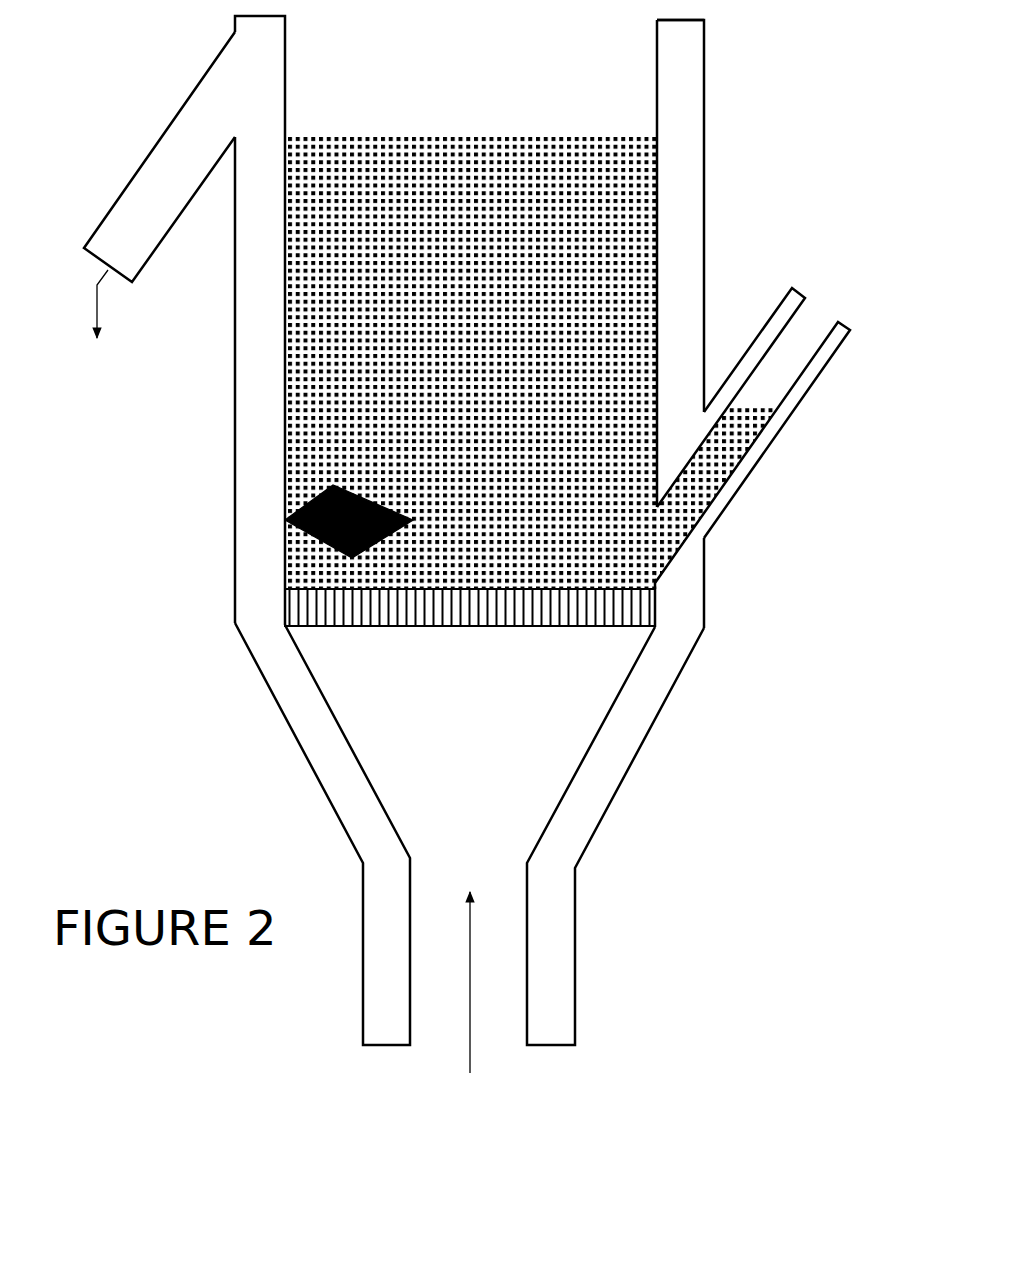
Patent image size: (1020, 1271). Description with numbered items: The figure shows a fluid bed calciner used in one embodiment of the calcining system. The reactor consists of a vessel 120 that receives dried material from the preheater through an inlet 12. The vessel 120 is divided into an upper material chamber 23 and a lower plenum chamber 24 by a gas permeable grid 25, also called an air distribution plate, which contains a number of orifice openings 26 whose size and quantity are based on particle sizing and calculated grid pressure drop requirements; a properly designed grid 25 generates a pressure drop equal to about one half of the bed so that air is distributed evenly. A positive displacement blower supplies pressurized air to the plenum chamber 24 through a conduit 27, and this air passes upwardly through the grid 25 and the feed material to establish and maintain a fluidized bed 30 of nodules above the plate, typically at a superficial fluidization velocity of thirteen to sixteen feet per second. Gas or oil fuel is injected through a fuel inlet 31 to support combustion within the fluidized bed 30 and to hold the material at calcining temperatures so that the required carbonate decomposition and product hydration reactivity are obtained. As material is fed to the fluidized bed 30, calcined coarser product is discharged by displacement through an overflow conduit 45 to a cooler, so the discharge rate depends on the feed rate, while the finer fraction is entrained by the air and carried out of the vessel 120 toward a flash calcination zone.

The inlet 12 is at (833, 296).
The upper material chamber 23 is at (704, 232).
The lower plenum chamber 24 is at (513, 767).
The gas permeable grid 25 is at (528, 636).
The orifice openings 26 is at (383, 627).
The conduit 27 is at (549, 1003).
The fluidized bed 30 is at (465, 200).
The fuel inlet 31 is at (219, 516).
The overflow conduit 45 is at (172, 120).
The vessel 120 is at (206, 457).